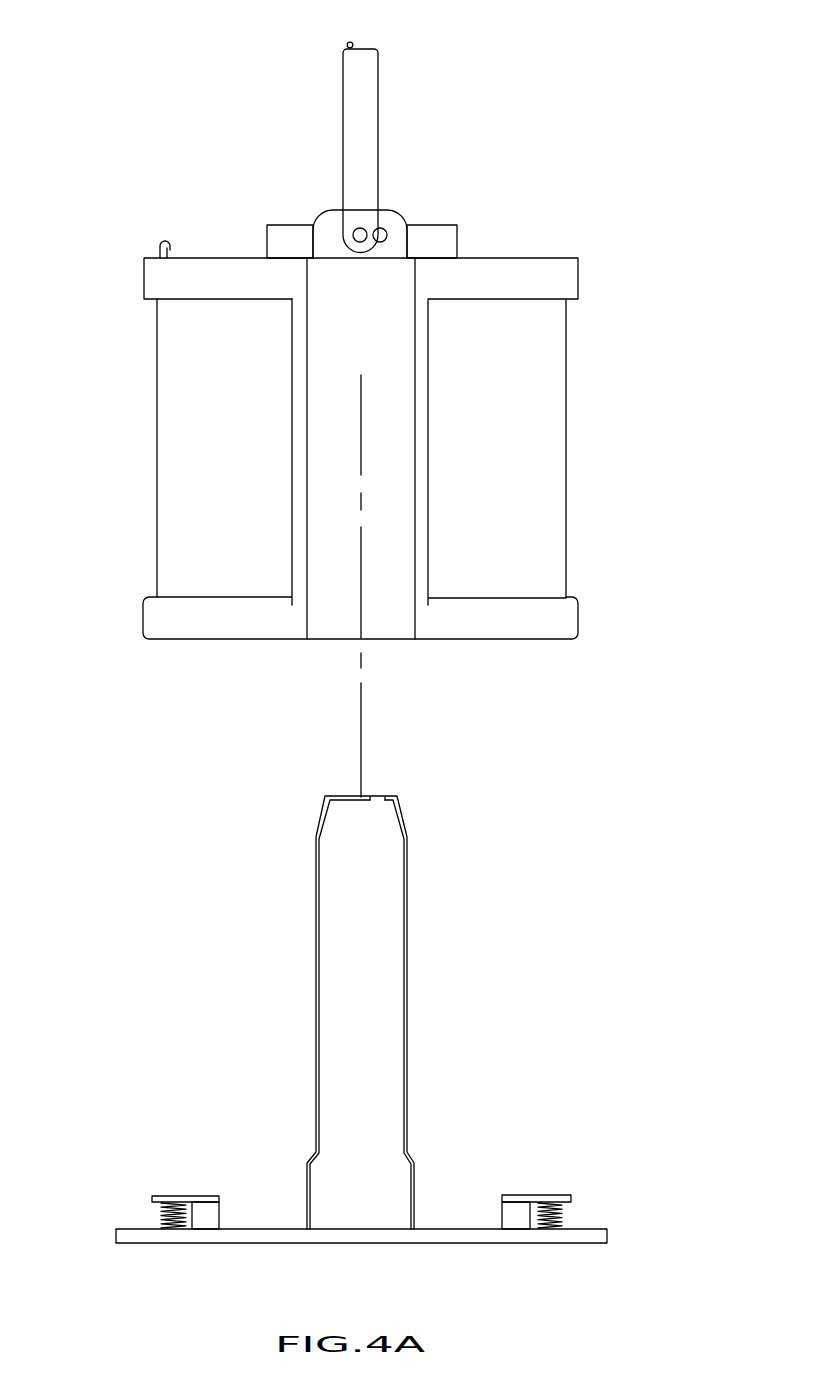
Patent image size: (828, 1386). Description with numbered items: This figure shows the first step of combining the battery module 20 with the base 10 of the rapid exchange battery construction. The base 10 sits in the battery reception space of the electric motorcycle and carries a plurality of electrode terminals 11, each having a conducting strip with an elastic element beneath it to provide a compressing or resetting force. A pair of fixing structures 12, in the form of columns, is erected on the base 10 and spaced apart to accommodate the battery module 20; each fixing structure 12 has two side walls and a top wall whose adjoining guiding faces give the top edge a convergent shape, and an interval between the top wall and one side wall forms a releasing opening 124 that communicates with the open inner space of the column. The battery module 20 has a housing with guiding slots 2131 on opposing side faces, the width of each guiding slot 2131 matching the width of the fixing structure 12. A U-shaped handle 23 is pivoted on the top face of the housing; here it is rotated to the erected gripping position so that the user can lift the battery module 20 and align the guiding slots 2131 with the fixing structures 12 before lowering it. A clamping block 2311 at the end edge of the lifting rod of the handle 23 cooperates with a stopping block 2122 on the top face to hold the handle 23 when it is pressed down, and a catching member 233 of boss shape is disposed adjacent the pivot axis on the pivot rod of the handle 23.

The base 10 is at (272, 995).
The electrode terminal 11 is at (163, 1182).
The fixing structure 12 is at (335, 880).
The releasing opening 124 is at (384, 792).
The battery module 20 is at (580, 427).
The handle 23 is at (392, 122).
The catching member 233 is at (385, 232).
The stopping block 2122 is at (158, 243).
The guiding slot 2131 is at (399, 597).
The clamping block 2311 is at (352, 42).